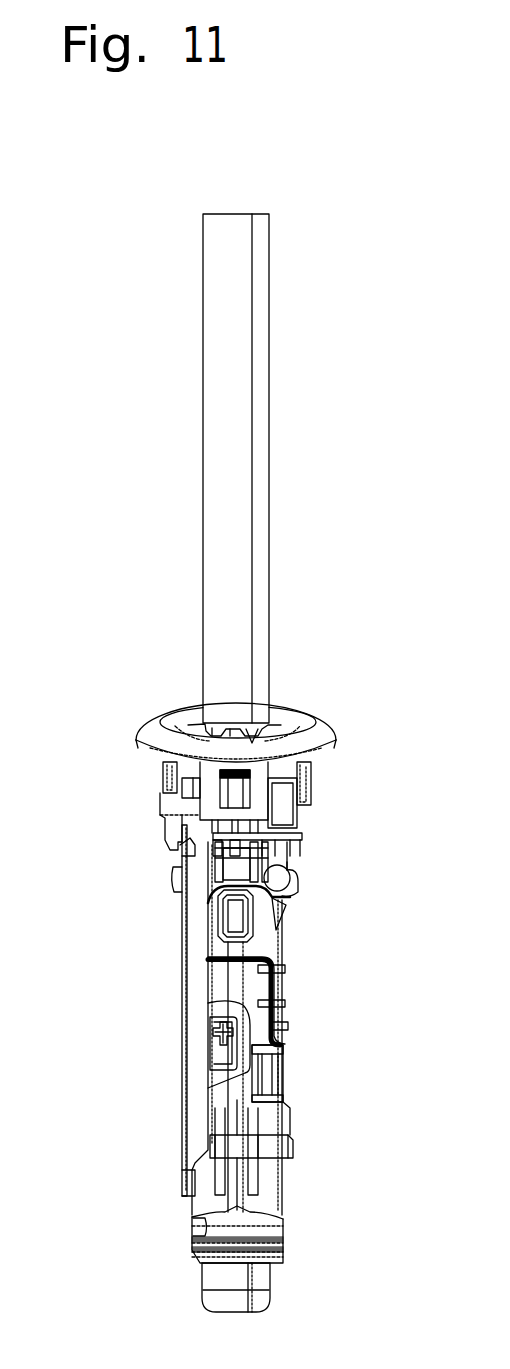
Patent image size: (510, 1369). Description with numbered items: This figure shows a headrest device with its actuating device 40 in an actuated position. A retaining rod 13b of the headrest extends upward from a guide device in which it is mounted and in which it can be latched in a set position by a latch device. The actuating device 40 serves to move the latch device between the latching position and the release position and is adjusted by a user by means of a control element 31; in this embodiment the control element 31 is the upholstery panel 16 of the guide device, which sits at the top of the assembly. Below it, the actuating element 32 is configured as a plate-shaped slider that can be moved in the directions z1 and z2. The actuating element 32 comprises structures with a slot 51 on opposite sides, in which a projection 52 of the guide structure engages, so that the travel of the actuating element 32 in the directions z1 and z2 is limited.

The retaining rod 13b is at (253, 337).
The upholstery panel 16 is at (318, 719).
The control element 31 is at (333, 733).
The actuating device 40 is at (135, 796).
The actuating element 32 is at (197, 922).
The slot 51 is at (210, 1058).
The projection 52 is at (208, 1027).